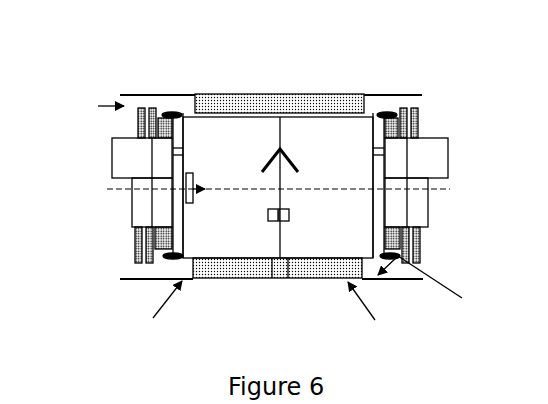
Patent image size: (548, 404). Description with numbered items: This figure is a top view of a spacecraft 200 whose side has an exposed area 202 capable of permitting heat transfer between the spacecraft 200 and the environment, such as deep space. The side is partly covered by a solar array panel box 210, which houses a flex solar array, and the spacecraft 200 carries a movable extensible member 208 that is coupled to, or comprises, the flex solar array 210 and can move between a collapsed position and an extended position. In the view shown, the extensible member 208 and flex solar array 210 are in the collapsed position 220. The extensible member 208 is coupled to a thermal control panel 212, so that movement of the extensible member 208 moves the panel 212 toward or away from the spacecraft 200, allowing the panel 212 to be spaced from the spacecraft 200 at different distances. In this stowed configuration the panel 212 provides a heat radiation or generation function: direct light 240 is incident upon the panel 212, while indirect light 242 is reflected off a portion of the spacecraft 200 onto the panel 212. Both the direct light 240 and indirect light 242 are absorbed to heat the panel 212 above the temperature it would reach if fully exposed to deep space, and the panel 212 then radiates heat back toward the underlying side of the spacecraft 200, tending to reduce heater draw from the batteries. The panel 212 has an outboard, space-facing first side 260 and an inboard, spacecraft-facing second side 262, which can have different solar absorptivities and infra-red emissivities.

The spacecraft 200 is at (441, 65).
The exposed area 202 is at (372, 113).
The extensible member 208 is at (280, 268).
The solar array panel box 210 is at (298, 94).
The thermal control panel 212 is at (143, 96).
The collapsed position 220 is at (98, 106).
The direct light 240 is at (167, 303).
The indirect light 242 is at (442, 284).
The first side 260 is at (200, 94).
The second side 262 is at (177, 102).